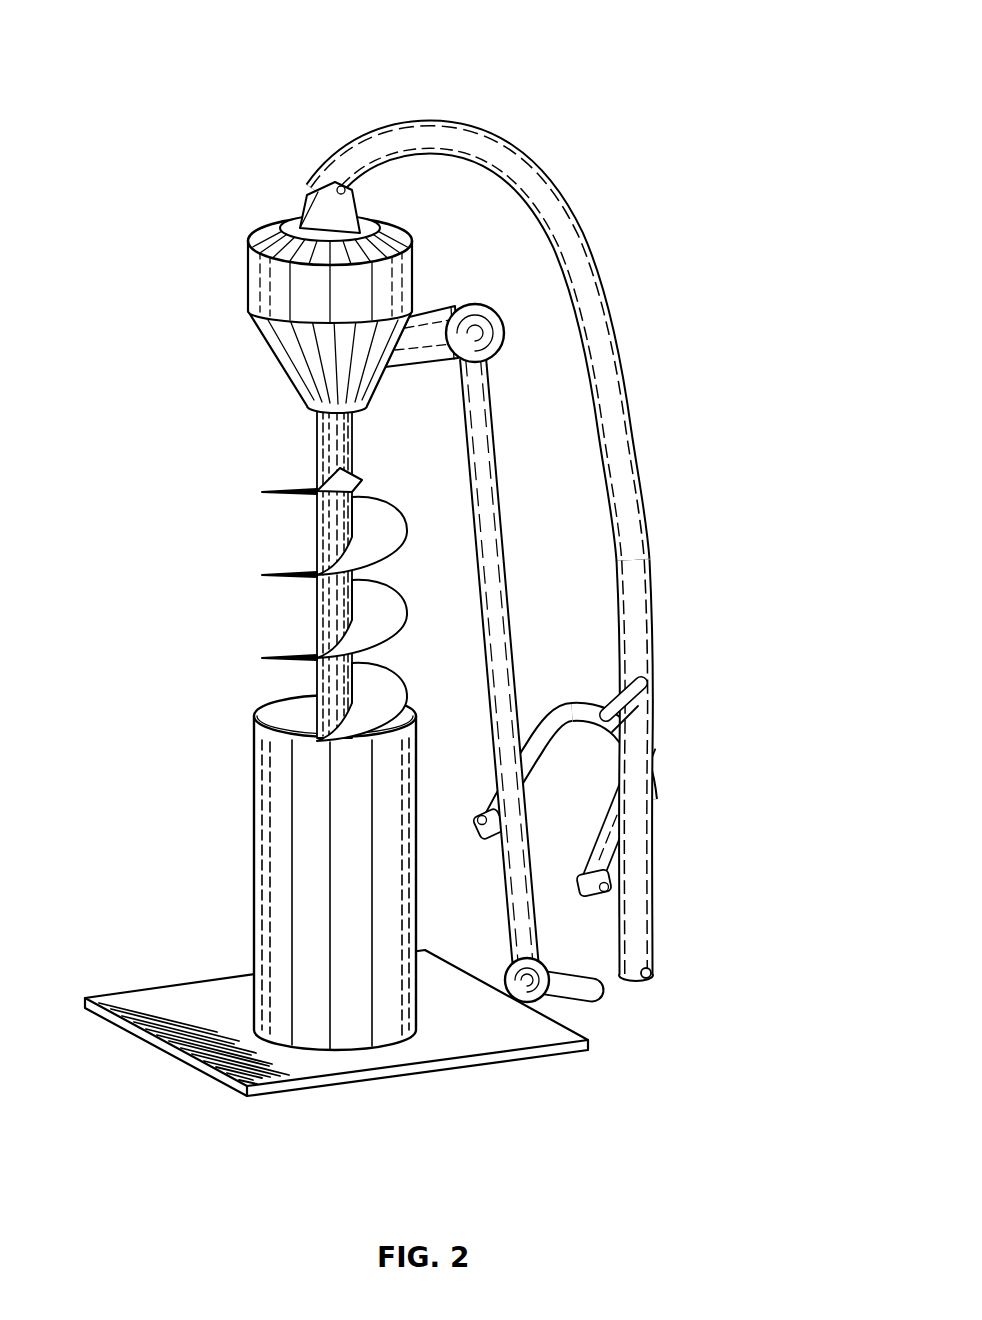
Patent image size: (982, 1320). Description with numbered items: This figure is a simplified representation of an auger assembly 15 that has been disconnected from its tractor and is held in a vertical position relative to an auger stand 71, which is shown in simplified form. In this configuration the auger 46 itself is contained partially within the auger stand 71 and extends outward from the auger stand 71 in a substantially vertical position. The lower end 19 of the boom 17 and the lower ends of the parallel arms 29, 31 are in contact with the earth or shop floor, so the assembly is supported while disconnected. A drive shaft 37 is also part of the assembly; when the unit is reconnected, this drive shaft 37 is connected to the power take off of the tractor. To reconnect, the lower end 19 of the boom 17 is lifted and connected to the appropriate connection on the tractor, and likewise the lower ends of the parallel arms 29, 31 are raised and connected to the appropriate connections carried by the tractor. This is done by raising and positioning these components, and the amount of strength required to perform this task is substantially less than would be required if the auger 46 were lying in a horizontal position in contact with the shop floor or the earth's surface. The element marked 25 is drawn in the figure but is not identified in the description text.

The auger assembly 15 is at (572, 101).
The boom 17 is at (618, 278).
The lower end of boom 19 is at (674, 920).
The U-shaped tube 25 is at (645, 739).
The parallel arm 29 is at (568, 749).
The parallel arm 31 is at (634, 821).
The drive shaft 37 is at (514, 470).
The auger 46 is at (201, 428).
The auger stand 71 is at (240, 855).